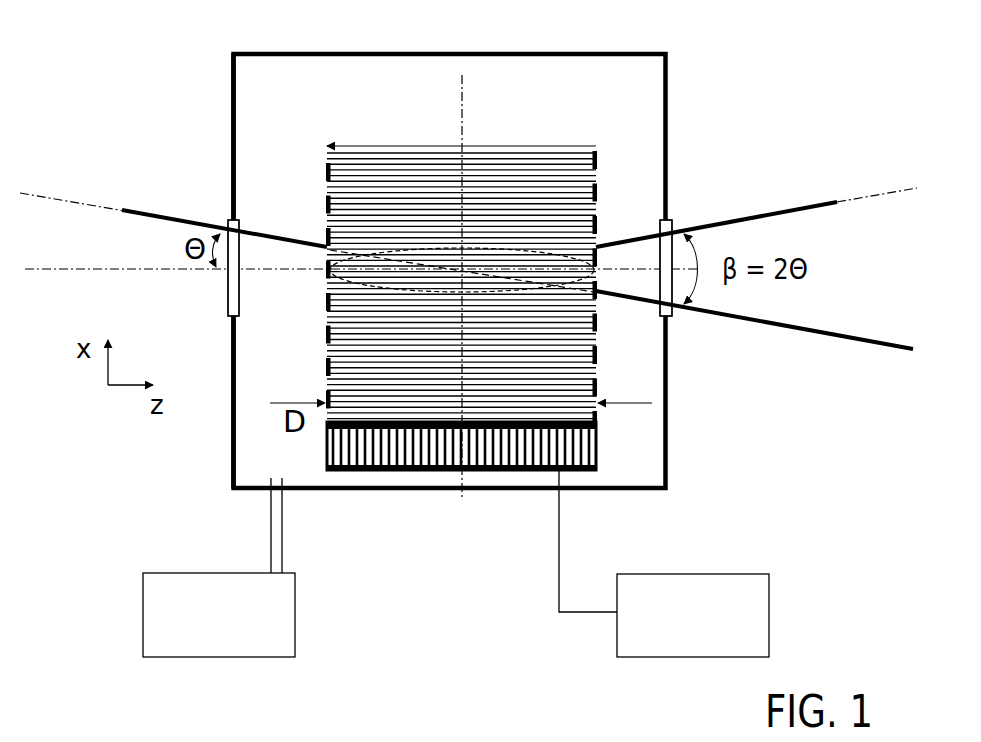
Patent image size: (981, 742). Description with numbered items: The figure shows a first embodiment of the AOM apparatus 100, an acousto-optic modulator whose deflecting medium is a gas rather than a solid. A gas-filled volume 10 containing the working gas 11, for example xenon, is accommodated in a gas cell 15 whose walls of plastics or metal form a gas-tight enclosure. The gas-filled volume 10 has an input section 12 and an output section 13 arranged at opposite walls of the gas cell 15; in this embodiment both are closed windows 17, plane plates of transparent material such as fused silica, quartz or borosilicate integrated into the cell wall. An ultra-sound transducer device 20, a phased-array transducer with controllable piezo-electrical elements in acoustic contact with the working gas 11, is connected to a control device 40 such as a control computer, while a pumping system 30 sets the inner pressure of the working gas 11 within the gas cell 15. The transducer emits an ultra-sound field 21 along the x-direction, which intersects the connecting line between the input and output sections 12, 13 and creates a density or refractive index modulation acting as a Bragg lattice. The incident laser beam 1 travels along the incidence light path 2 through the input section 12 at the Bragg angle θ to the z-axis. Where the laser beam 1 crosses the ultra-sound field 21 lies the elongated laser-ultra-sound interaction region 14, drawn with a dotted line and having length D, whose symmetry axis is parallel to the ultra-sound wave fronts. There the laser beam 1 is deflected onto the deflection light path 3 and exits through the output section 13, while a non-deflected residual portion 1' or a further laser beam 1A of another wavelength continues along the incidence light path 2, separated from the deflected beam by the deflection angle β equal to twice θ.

The laser beam 1 is at (502, 226).
The non-deflected residual portion 1' is at (757, 351).
The further laser beam 1A is at (795, 331).
The incidence light path 2 is at (84, 202).
The deflection light path 3 is at (888, 193).
The gas-filled volume 10 is at (608, 100).
The working gas 11 is at (353, 72).
The input section 12 is at (251, 218).
The output section 13 is at (650, 222).
The laser-ultra-sound interaction region 14 is at (426, 248).
The gas cell 15 is at (232, 143).
The closed windows 17 is at (232, 287).
The ultra-sound transducer device 20 is at (632, 459).
The ultra-sound field 21 is at (332, 373).
The pumping system 30 is at (283, 652).
The control device 40 is at (757, 652).
The AOM apparatus 100 is at (797, 467).